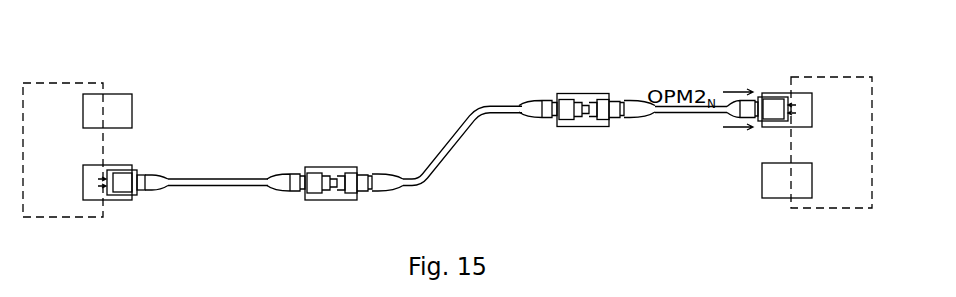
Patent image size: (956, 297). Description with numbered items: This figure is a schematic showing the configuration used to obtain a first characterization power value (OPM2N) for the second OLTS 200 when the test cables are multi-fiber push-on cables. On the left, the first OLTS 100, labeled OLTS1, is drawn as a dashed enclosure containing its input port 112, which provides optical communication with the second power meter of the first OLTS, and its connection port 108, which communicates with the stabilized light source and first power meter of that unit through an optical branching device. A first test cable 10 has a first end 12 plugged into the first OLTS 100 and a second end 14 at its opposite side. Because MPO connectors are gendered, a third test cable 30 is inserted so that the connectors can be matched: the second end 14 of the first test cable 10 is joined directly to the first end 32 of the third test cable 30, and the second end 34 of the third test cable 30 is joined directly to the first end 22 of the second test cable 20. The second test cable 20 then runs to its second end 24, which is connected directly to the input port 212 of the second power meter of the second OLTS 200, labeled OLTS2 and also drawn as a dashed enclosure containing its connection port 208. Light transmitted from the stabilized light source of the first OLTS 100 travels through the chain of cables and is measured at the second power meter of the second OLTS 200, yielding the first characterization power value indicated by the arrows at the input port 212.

The first OLTS 100 is at (104, 82).
The input port 112 is at (123, 115).
The connection port 108 is at (118, 197).
The first end 12 is at (152, 187).
The first test cable 10 is at (220, 186).
The second end 14 is at (302, 180).
The first end 32 is at (363, 180).
The third test cable 30 is at (433, 165).
The second end 34 is at (547, 105).
The first end 22 is at (614, 105).
The second test cable 20 is at (702, 113).
The second end 24 is at (775, 110).
The second OLTS 200 is at (870, 76).
The input port 212 is at (800, 123).
The connection port 208 is at (777, 188).